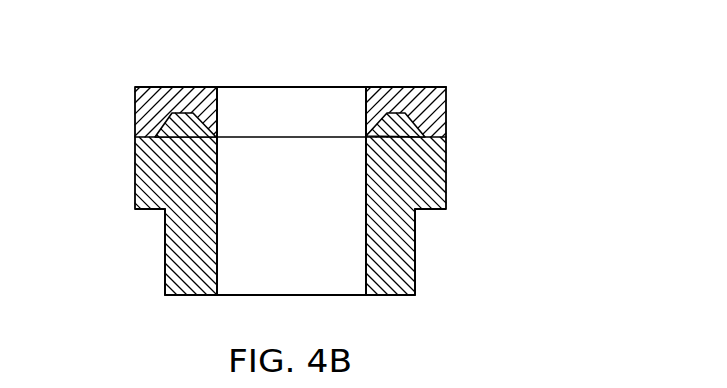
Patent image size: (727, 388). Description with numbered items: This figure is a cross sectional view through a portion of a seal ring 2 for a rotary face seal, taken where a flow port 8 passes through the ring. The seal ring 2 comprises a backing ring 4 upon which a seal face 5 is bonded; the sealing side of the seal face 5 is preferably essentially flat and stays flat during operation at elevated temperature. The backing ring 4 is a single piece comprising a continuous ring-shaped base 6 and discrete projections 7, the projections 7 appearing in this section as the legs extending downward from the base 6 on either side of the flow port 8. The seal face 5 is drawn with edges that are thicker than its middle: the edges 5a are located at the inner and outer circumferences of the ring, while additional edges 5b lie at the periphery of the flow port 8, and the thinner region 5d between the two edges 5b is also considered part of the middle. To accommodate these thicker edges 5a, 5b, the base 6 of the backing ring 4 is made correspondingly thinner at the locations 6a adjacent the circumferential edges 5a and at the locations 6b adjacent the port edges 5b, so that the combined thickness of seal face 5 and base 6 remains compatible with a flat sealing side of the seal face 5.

The seal ring 2 is at (520, 183).
The backing ring 4 is at (142, 173).
The seal face 5 is at (182, 95).
The edges of seal face 5a is at (145, 98).
The additional edges of seal face 5b is at (201, 93).
The middle of seal face 5d is at (407, 93).
The base 6 is at (143, 193).
The thinner locations of base 6a is at (142, 150).
The thinner locations of base 6b is at (203, 160).
The projections 7 is at (192, 283).
The flow port 8 is at (317, 90).